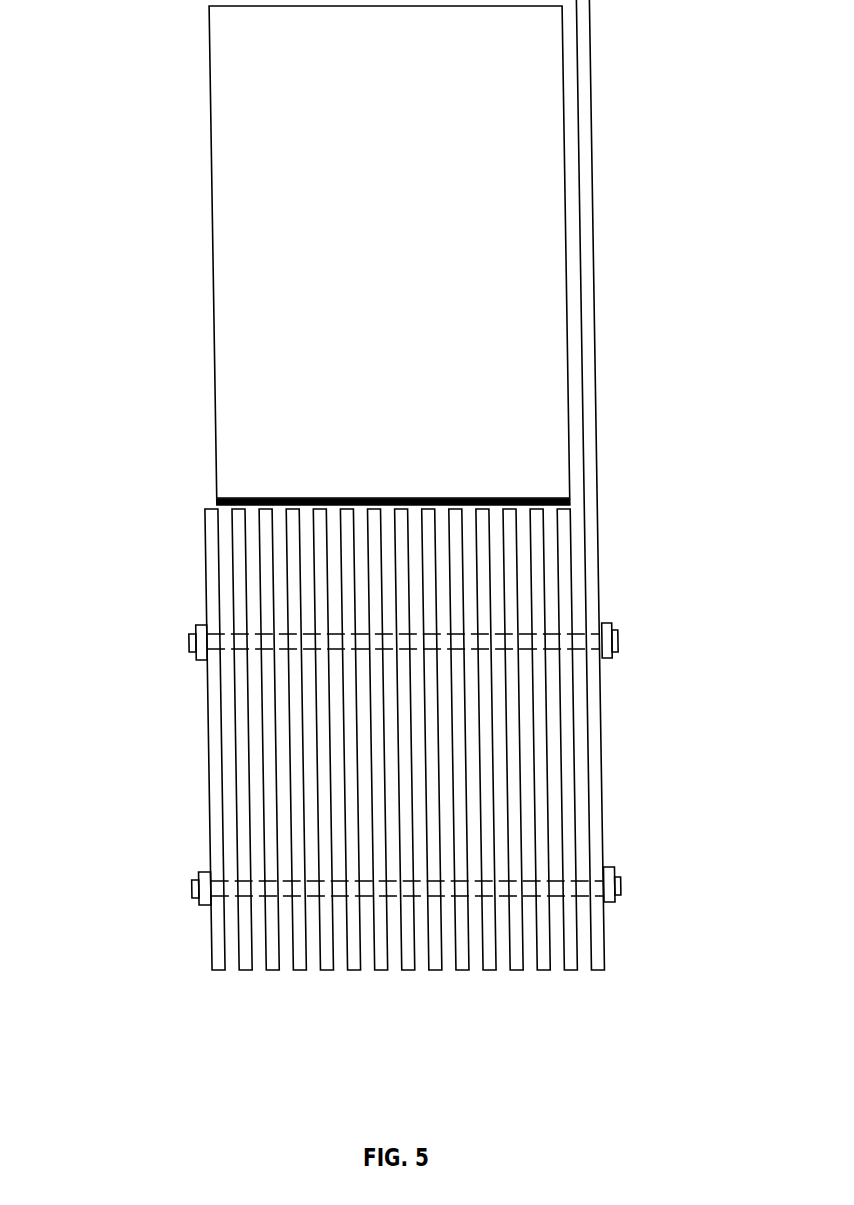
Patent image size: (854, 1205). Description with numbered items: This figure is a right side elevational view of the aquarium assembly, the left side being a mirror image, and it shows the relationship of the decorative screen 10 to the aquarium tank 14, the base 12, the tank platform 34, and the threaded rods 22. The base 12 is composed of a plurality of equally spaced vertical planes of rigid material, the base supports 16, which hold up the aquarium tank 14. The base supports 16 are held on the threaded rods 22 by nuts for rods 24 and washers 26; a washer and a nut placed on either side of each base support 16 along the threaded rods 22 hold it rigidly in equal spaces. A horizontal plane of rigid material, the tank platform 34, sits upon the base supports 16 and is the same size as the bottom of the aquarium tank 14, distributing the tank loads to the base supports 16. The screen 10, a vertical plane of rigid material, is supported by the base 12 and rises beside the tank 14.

The aquarium screen 10 is at (593, 196).
The base 12 is at (285, 972).
The aquarium tank 14 is at (209, 42).
The base supports 16 is at (543, 972).
The threaded rods 22 is at (621, 885).
The nuts for rods 24 is at (610, 868).
The washers 26 is at (607, 900).
The tank platform 34 is at (217, 501).